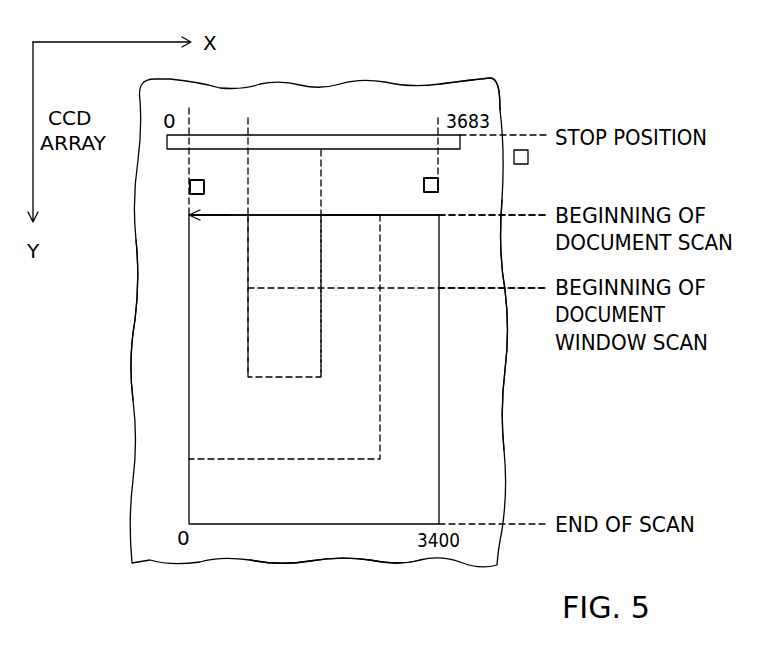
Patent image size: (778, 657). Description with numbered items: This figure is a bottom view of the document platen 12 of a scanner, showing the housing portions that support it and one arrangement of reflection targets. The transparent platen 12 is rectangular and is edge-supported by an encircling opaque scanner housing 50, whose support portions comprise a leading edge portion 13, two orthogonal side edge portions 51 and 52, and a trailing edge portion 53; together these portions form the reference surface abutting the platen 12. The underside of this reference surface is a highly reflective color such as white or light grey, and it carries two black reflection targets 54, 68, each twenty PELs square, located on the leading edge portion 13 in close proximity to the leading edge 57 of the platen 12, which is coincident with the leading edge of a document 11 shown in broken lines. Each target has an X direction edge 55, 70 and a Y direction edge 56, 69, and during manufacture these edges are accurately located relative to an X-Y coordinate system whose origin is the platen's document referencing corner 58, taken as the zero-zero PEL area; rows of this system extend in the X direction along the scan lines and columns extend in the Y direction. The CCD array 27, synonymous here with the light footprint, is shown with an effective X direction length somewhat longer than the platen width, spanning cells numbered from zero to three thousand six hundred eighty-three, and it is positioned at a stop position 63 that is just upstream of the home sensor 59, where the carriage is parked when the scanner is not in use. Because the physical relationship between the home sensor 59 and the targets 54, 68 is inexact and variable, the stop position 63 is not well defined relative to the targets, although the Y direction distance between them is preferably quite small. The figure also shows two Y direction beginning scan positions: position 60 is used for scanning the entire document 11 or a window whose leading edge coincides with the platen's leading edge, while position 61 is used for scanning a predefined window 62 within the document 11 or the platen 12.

The document 11 is at (343, 459).
The document platen 12 is at (314, 367).
The leading edge portion 13 is at (297, 188).
The CCD array 27 is at (152, 150).
The scanner housing 50 is at (514, 485).
The side edge portion 51 is at (475, 413).
The side edge portion 52 is at (160, 345).
The trailing edge portion 53 is at (343, 545).
The reflection target 54 is at (200, 180).
The X direction edge 55 is at (190, 187).
The Y direction edge 56 is at (196, 195).
The leading edge 57 is at (352, 217).
The document referencing corner 58 is at (189, 218).
The home sensor 59 is at (528, 157).
The beginning scan position 60 is at (478, 218).
The beginning scan position 61 is at (481, 290).
The predefined window 62 is at (284, 296).
The stop position 63 is at (497, 98).
The reflection target 68 is at (424, 186).
The Y direction edge 69 is at (430, 178).
The X direction edge 70 is at (438, 186).